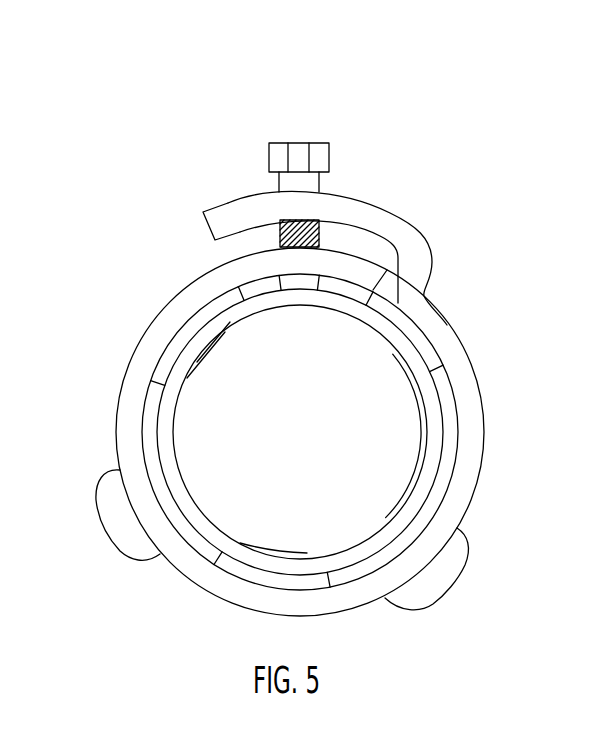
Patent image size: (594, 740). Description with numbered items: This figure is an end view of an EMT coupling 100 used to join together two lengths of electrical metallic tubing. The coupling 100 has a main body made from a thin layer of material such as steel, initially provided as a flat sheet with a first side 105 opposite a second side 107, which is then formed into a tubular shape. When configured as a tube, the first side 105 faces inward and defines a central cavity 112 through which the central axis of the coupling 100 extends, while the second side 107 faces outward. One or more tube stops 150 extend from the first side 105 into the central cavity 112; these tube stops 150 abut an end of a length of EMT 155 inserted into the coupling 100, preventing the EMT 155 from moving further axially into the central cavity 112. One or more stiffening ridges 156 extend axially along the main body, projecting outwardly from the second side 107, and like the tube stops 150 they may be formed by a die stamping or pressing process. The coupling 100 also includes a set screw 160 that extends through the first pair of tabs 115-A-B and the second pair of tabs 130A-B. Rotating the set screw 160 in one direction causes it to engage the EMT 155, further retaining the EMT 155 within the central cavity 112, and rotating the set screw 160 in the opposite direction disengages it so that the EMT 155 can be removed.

The coupling 100 is at (307, 341).
The first side 105 is at (420, 332).
The second side 107 is at (486, 462).
The central cavity 112 is at (252, 462).
The first pair of tabs 115-A-B is at (311, 190).
The second pair of tabs 130A-B is at (243, 258).
The tube stops 150 is at (178, 349).
The EMT 155 is at (420, 490).
The stiffening ridges 156 is at (135, 542).
The set screw 160 is at (299, 152).